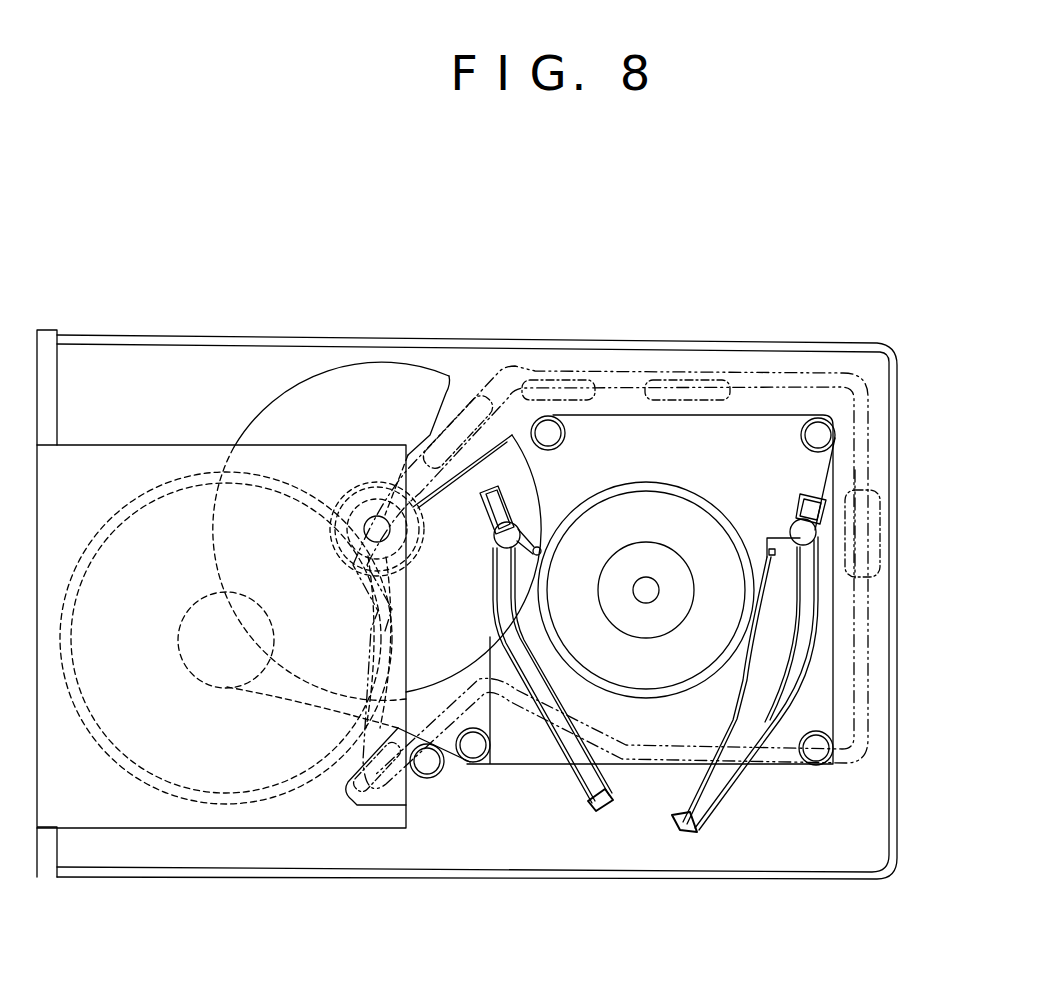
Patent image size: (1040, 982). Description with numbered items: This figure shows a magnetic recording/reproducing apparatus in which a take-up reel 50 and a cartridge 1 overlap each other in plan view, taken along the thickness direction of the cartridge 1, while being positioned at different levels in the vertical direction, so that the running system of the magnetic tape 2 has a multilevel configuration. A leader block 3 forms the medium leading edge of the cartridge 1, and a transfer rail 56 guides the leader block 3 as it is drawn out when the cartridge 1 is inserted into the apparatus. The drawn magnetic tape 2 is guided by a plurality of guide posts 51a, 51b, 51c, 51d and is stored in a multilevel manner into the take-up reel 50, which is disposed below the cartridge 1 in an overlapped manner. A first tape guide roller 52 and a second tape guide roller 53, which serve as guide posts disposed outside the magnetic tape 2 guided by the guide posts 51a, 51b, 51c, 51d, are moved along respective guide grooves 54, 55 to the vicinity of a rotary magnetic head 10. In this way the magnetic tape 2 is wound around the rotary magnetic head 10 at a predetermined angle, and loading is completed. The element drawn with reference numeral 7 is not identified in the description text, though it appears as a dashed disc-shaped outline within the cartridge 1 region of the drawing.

The cartridge 1 is at (170, 446).
The magnetic tape 2 is at (898, 615).
The leader block 3 is at (562, 366).
The disc 7 is at (121, 520).
The rotary magnetic head 10 is at (697, 486).
The take-up reel 50 is at (358, 383).
The guide post 51a is at (473, 752).
The guide post 51b is at (814, 753).
The guide post 51c is at (812, 432).
The guide post 51d is at (554, 437).
The first tape guide roller 52 is at (500, 540).
The second tape guide roller 53 is at (797, 528).
The guide groove 54 is at (492, 598).
The guide groove 55 is at (786, 688).
The transfer rail 56 is at (870, 666).